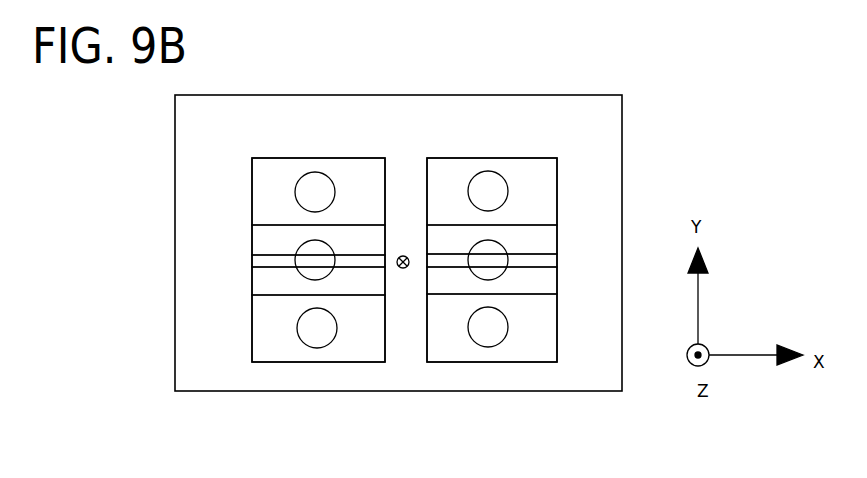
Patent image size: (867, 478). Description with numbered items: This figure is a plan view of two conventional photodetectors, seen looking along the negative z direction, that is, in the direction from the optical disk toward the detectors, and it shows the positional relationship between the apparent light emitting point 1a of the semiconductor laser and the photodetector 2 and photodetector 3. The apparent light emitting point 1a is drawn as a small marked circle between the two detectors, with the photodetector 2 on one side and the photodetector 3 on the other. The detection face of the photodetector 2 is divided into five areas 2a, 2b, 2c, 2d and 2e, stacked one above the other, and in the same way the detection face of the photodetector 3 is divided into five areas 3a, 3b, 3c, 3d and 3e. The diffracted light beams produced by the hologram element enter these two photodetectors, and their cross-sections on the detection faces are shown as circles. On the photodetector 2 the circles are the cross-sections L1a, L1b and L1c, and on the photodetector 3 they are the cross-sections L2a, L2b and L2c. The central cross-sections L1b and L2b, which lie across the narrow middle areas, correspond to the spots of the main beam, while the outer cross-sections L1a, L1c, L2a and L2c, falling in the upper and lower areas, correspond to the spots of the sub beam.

The apparent light emitting point 1a is at (404, 268).
The photodetector 2 is at (370, 362).
The area 2a is at (263, 183).
The area 2b is at (263, 239).
The area 2c is at (263, 264).
The area 2d is at (263, 289).
The area 2e is at (263, 328).
The photodetector 3 is at (537, 362).
The area 3a is at (538, 177).
The area 3b is at (540, 232).
The area 3c is at (540, 258).
The area 3d is at (540, 282).
The area 3e is at (540, 322).
The cross-section of light beam L1a is at (323, 174).
The cross-section of light beam L1b is at (323, 243).
The cross-section of light beam L1c is at (307, 345).
The cross-section of light beam L2a is at (496, 173).
The cross-section of light beam L2b is at (496, 242).
The cross-section of light beam L2c is at (480, 346).